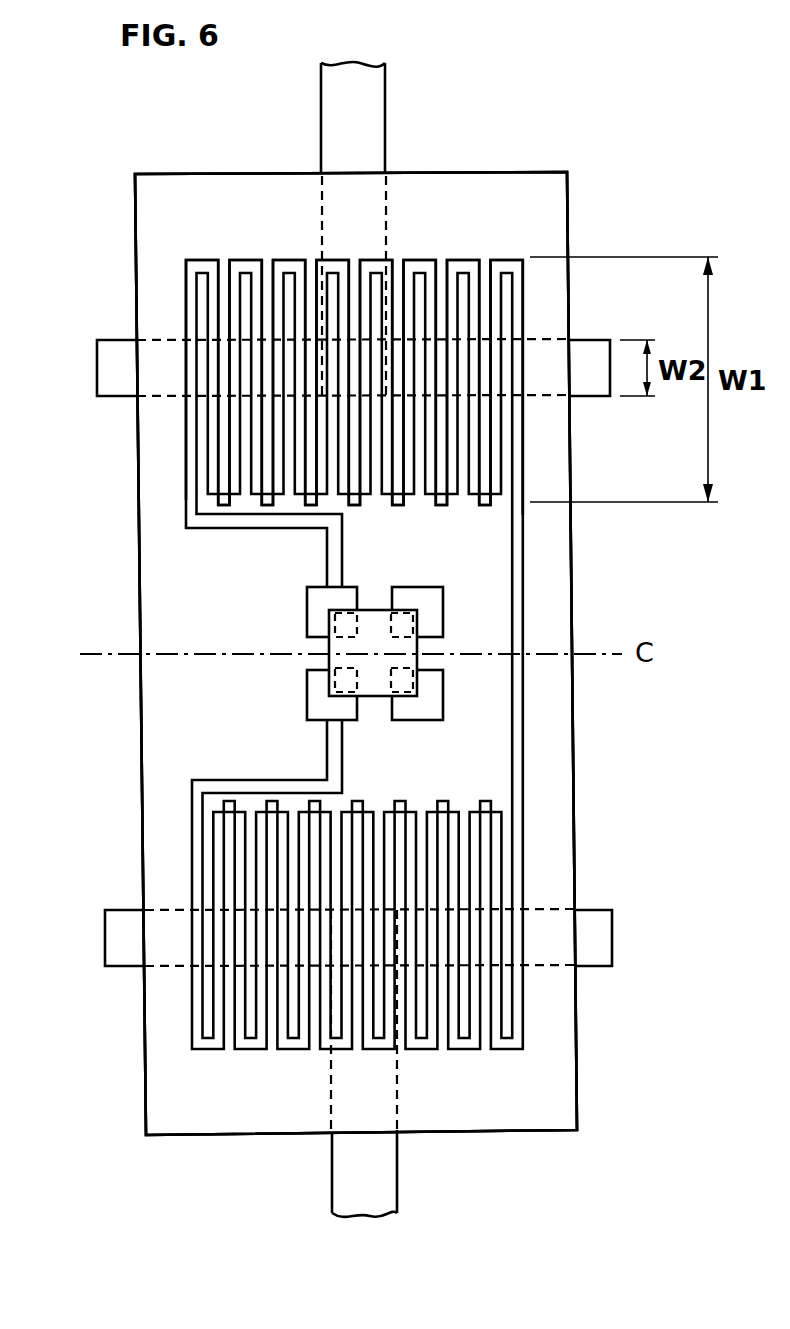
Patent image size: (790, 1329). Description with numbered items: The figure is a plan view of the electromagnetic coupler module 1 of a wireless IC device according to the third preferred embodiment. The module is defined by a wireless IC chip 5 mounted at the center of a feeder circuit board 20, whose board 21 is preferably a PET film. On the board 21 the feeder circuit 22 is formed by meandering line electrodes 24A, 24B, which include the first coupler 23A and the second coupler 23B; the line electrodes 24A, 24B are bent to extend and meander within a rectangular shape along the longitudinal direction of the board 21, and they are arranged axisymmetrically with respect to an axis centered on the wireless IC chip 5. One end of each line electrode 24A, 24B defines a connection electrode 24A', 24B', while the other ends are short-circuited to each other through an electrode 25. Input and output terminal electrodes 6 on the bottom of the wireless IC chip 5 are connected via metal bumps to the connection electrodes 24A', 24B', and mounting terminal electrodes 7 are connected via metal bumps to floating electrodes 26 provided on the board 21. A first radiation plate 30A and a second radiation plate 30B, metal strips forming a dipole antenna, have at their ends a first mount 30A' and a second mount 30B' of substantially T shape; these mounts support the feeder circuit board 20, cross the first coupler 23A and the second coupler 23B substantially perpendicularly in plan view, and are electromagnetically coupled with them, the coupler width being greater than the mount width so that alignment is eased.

The electromagnetic coupler module 1 is at (578, 127).
The wireless IC chip 5 is at (372, 610).
The input and output terminal electrodes 6 is at (334, 620).
The mounting terminal electrodes 7 is at (414, 622).
The feeder circuit board 20 is at (584, 769).
The board 21 is at (137, 225).
The feeder circuit 22 is at (532, 240).
The first coupler 23A is at (250, 452).
The second coupler 23B is at (245, 1012).
The line electrode 24A is at (247, 554).
The connection electrode 24A' is at (286, 597).
The line electrode 24B is at (251, 755).
The connection electrode 24B' is at (292, 718).
The electrode 25 is at (525, 578).
The floating electrodes 26 is at (442, 597).
The first radiation plate 30A is at (408, 229).
The first mount 30A' is at (378, 392).
The second radiation plate 30B is at (423, 1063).
The second mount 30B' is at (382, 907).